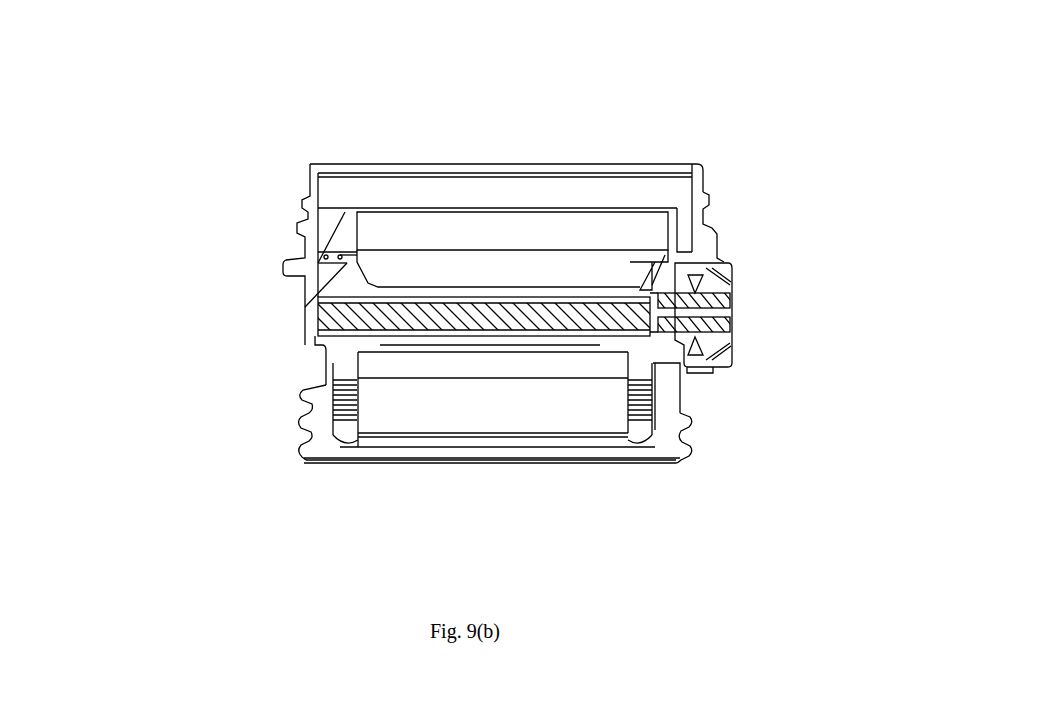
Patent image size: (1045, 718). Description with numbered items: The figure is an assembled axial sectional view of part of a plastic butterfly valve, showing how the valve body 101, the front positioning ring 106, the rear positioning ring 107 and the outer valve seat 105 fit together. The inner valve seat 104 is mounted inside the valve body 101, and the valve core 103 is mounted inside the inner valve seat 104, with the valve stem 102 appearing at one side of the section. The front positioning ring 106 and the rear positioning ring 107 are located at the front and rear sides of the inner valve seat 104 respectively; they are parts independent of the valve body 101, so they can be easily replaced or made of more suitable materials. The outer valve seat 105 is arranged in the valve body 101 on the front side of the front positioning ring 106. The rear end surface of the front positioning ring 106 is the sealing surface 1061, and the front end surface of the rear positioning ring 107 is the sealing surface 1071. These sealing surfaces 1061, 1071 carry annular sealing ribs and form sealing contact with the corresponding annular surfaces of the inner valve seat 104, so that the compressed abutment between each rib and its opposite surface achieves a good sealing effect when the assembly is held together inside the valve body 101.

The valve body 101 is at (313, 268).
The valve stem 102 is at (720, 353).
The valve core 103 is at (592, 292).
The inner valve seat 104 is at (332, 332).
The outer valve seat 105 is at (333, 443).
The front positioning ring 106 is at (688, 443).
The sealing surface 1061 is at (678, 395).
The rear positioning ring 107 is at (353, 190).
The sealing surface 1071 is at (628, 262).